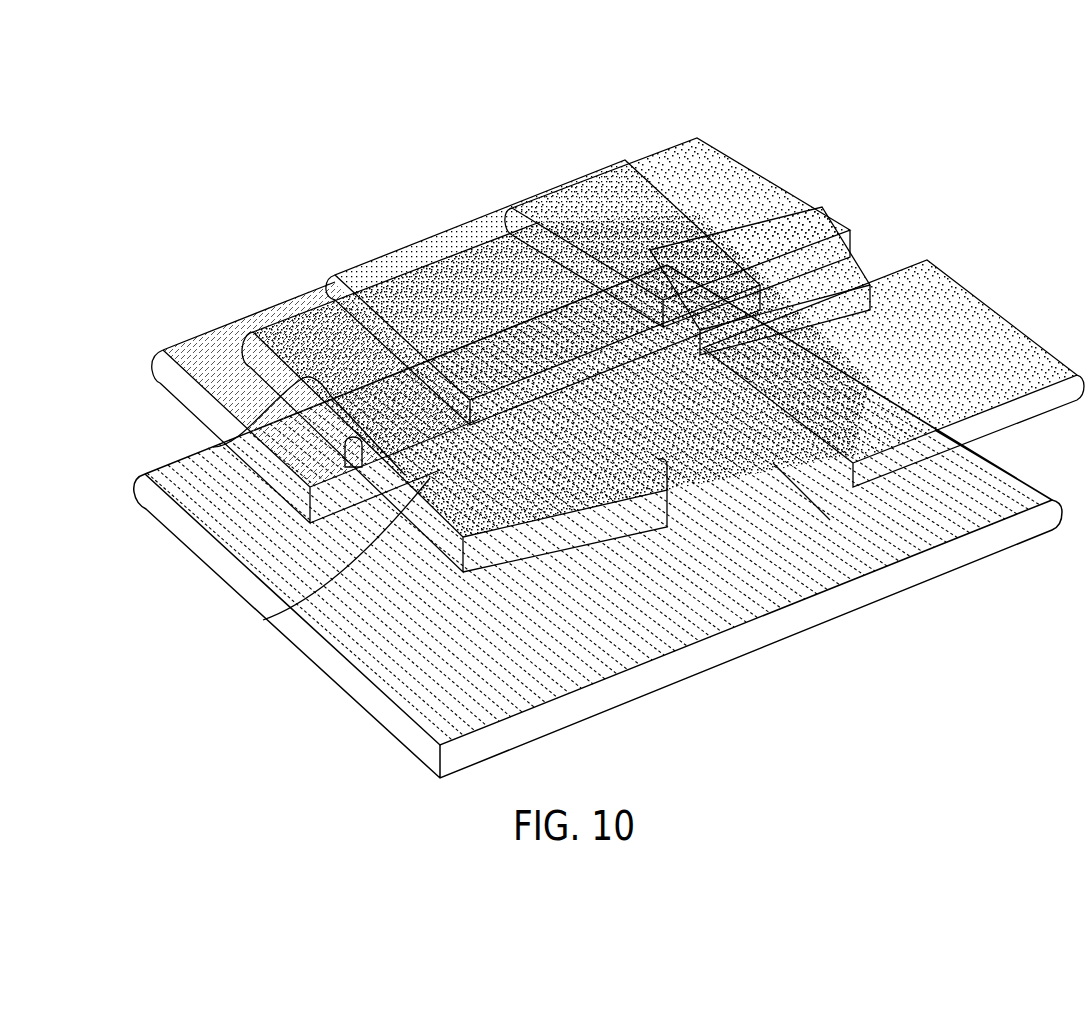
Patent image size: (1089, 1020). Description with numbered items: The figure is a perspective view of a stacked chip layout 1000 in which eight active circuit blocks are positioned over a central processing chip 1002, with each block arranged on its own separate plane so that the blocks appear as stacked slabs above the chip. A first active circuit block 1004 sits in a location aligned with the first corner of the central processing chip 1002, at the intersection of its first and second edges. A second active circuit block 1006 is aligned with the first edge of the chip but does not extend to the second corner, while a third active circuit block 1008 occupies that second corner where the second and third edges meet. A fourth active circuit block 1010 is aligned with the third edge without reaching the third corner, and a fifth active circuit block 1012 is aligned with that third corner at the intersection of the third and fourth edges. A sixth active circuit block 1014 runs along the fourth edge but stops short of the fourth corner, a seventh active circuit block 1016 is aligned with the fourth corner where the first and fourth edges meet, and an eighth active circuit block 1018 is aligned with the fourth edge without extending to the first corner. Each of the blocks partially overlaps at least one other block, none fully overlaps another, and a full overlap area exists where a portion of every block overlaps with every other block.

The stacked chip layout 1000 is at (140, 160).
The central processing chip 1002 is at (833, 607).
The first active circuit block 1004 is at (207, 407).
The second active circuit block 1006 is at (458, 250).
The third active circuit block 1008 is at (720, 180).
The fourth active circuit block 1010 is at (852, 252).
The fifth active circuit block 1012 is at (990, 328).
The sixth active circuit block 1014 is at (830, 520).
The seventh active circuit block 1016 is at (263, 620).
The eighth active circuit block 1018 is at (213, 447).